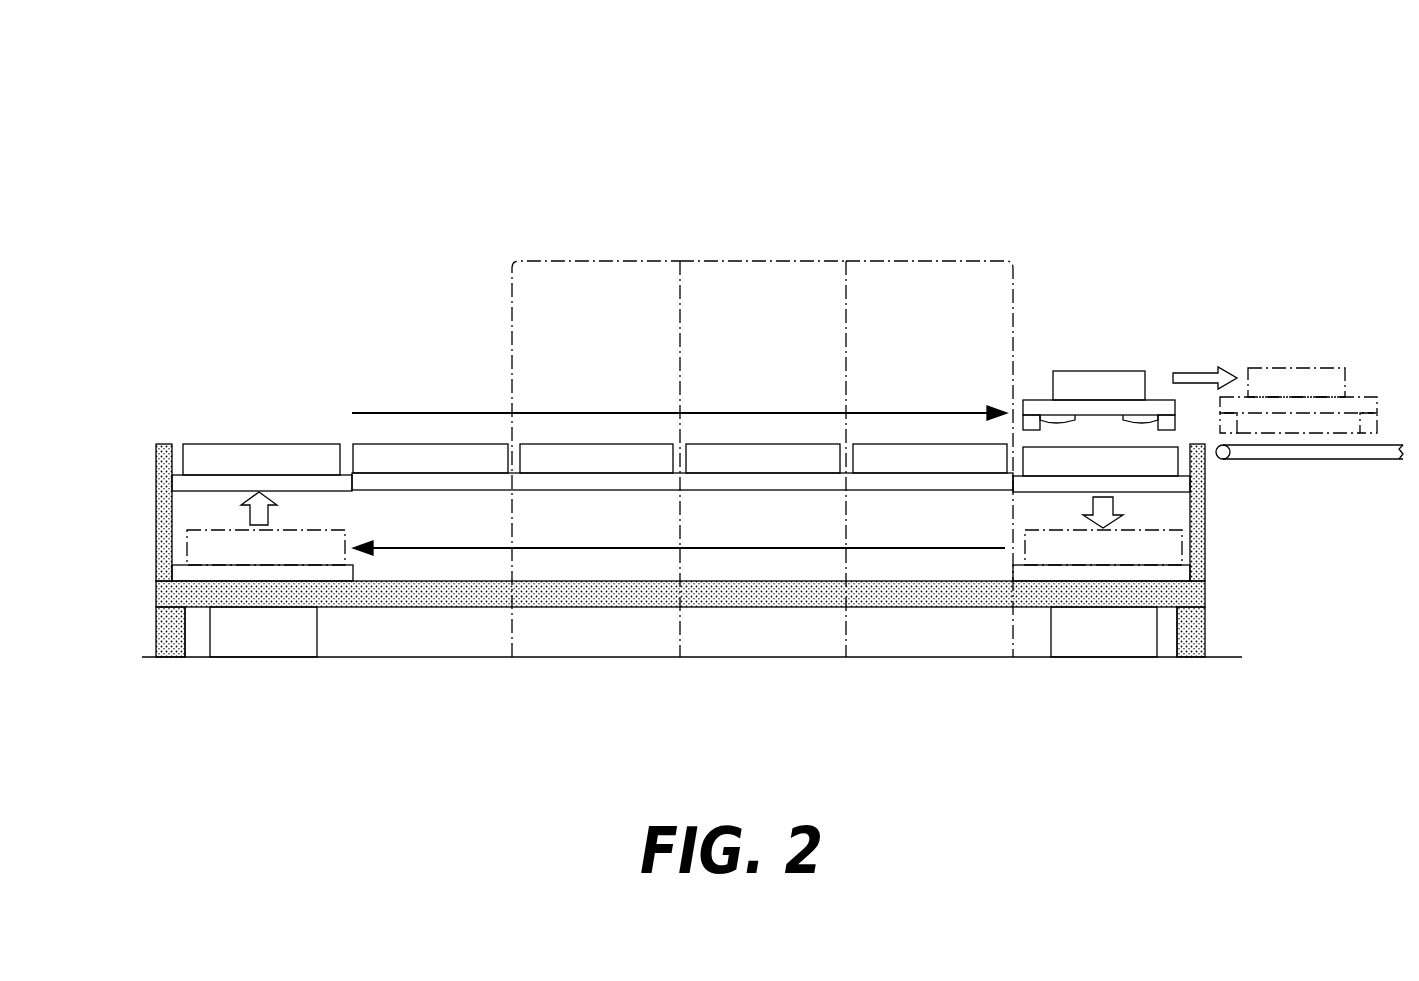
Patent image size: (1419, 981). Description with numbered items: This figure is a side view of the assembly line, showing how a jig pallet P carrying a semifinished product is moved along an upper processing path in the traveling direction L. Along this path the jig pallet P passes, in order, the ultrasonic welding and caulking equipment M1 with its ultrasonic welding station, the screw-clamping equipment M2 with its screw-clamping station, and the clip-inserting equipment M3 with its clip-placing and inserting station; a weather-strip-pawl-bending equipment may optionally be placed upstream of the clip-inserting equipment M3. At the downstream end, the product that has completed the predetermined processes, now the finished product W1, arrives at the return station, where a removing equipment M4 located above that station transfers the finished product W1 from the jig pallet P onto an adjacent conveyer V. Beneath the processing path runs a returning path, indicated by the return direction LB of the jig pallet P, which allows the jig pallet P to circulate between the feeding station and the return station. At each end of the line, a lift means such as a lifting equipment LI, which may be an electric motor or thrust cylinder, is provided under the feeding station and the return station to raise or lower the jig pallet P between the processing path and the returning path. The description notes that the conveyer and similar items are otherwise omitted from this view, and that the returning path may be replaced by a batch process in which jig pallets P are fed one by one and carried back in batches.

The ultrasonic welding and caulking equipment M1 is at (584, 248).
The screw-clamping equipment M2 is at (746, 248).
The clip-inserting equipment M3 is at (956, 248).
The removing equipment M4 is at (1297, 378).
The traveling direction L is at (573, 410).
The return direction LB is at (593, 552).
The lifting equipment LI is at (255, 632).
The jig pallet P is at (258, 457).
The finished product W1 is at (1130, 418).
The conveyor V is at (1367, 460).